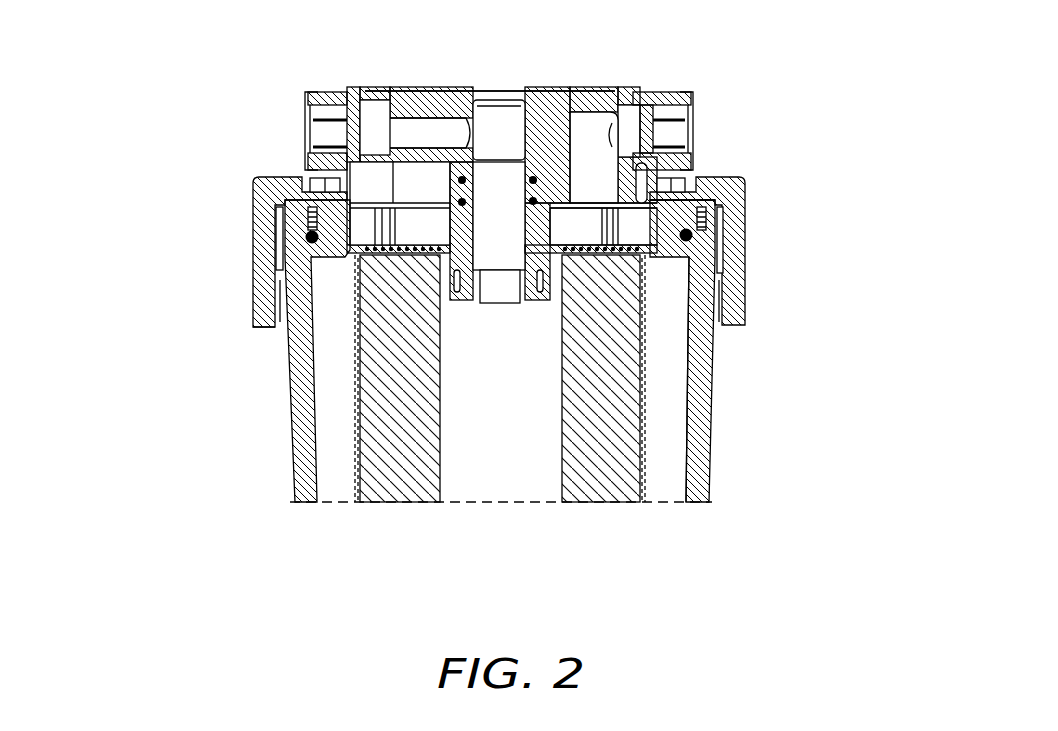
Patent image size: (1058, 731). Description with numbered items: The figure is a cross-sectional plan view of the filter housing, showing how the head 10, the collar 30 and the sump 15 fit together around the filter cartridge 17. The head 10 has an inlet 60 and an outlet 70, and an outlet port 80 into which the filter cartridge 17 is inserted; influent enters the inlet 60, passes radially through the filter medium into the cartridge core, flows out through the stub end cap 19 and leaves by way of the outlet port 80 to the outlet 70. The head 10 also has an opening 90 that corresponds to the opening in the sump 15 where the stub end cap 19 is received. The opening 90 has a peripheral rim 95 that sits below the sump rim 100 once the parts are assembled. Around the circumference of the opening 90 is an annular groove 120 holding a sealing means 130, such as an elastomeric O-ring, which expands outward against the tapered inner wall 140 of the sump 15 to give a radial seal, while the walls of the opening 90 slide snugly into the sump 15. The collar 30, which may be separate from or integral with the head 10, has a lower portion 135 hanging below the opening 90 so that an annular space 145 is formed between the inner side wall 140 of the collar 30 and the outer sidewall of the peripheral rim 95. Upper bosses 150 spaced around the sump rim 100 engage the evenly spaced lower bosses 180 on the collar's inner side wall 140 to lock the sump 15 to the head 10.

The head 10 is at (340, 82).
The sump 15 is at (716, 360).
The filter cartridge 17 is at (359, 374).
The stub end cap 19 is at (535, 163).
The collar 30 is at (262, 213).
The inlet 60 is at (680, 131).
The outlet 70 is at (325, 133).
The outlet port 80 is at (515, 220).
The opening 90 is at (666, 259).
The peripheral rim 95 is at (312, 219).
The sump rim 100 is at (678, 208).
The annular groove 120 is at (309, 242).
The sealing means 130 is at (693, 238).
The lower portion 135 is at (252, 325).
The inner wall 140 is at (690, 410).
The annular space 145 is at (278, 328).
The upper bosses 150 is at (720, 232).
The lower bosses 180 is at (721, 293).